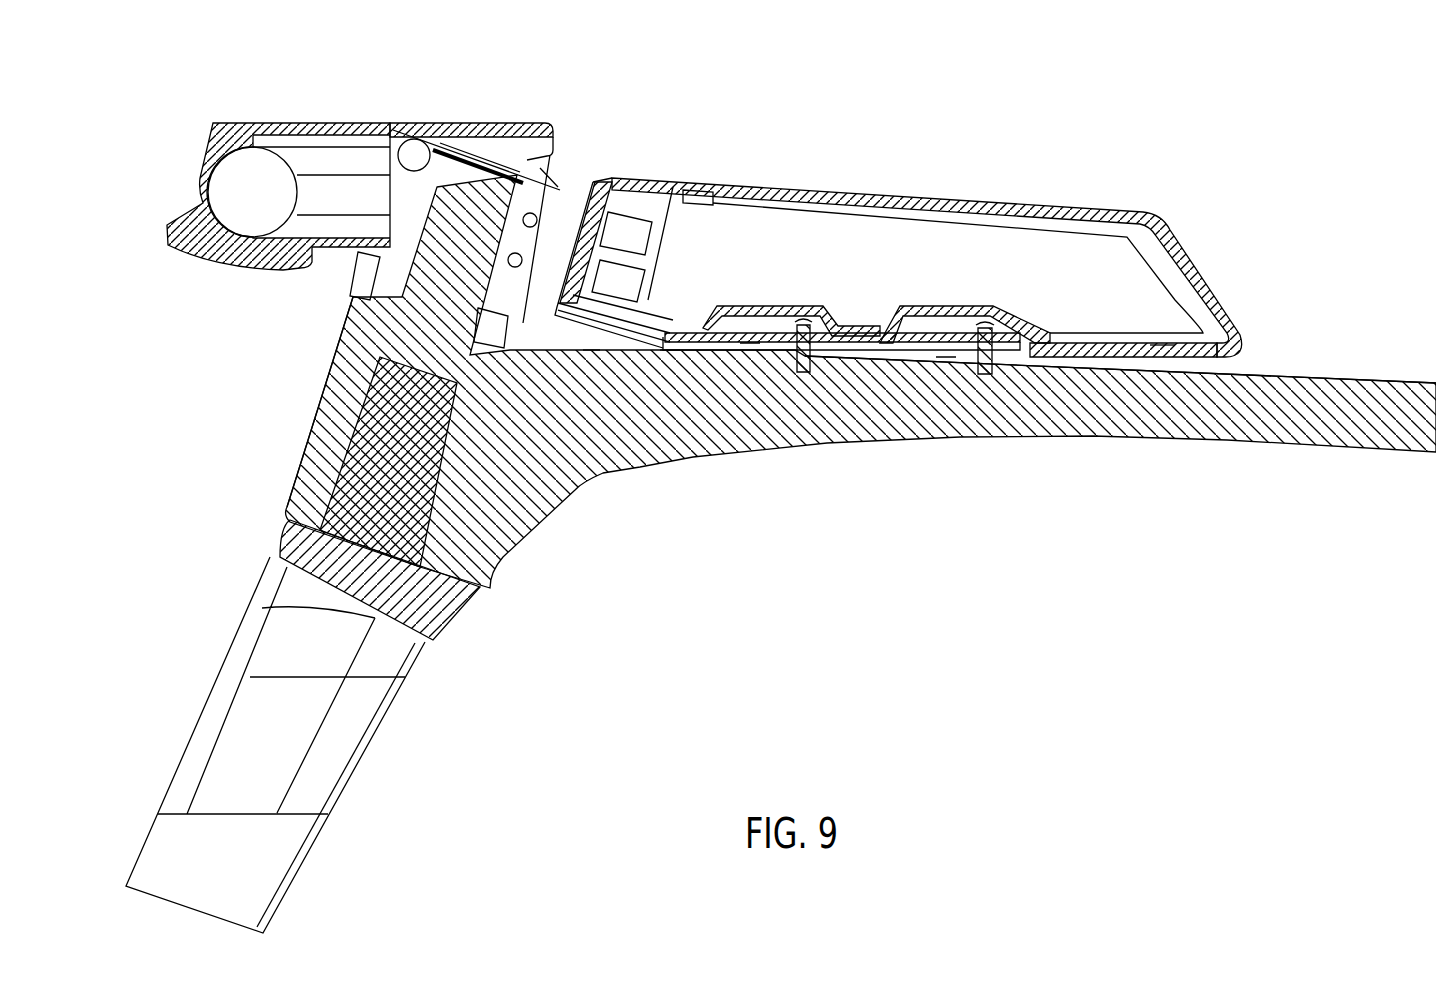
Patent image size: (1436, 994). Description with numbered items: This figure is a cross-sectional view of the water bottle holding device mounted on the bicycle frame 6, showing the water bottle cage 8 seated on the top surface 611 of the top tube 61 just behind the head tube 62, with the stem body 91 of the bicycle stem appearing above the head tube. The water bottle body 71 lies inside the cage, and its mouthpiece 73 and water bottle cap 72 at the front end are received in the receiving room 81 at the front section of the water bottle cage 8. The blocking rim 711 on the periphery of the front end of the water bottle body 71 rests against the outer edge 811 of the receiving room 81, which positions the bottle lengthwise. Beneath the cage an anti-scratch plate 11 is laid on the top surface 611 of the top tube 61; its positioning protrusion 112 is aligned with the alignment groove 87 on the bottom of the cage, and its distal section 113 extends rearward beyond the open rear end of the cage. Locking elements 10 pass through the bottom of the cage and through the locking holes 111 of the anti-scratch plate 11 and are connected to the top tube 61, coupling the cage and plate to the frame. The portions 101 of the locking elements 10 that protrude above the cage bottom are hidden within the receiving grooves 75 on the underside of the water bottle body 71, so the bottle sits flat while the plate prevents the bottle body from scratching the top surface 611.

The bicycle frame 6 is at (327, 428).
The water bottle cage 8 is at (493, 125).
The locking elements 10 is at (800, 370).
The anti-scratch plate 11 is at (671, 350).
The top tube 61 is at (1280, 422).
The head tube 62 is at (510, 280).
The water bottle body 71 is at (1163, 220).
The water bottle cap 72 is at (640, 207).
The mouthpiece 73 is at (596, 290).
The receiving grooves 75 is at (754, 306).
The receiving room 81 is at (594, 300).
The alignment groove 87 is at (841, 448).
The stem body 91 is at (300, 122).
The portions of the locking elements 101 is at (805, 325).
The locking holes 111 is at (750, 343).
The positioning protrusion 112 is at (843, 347).
The distal section 113 is at (1163, 345).
The top surface 611 is at (1325, 376).
The blocking rim 711 is at (592, 101).
The outer edge 811 is at (672, 187).